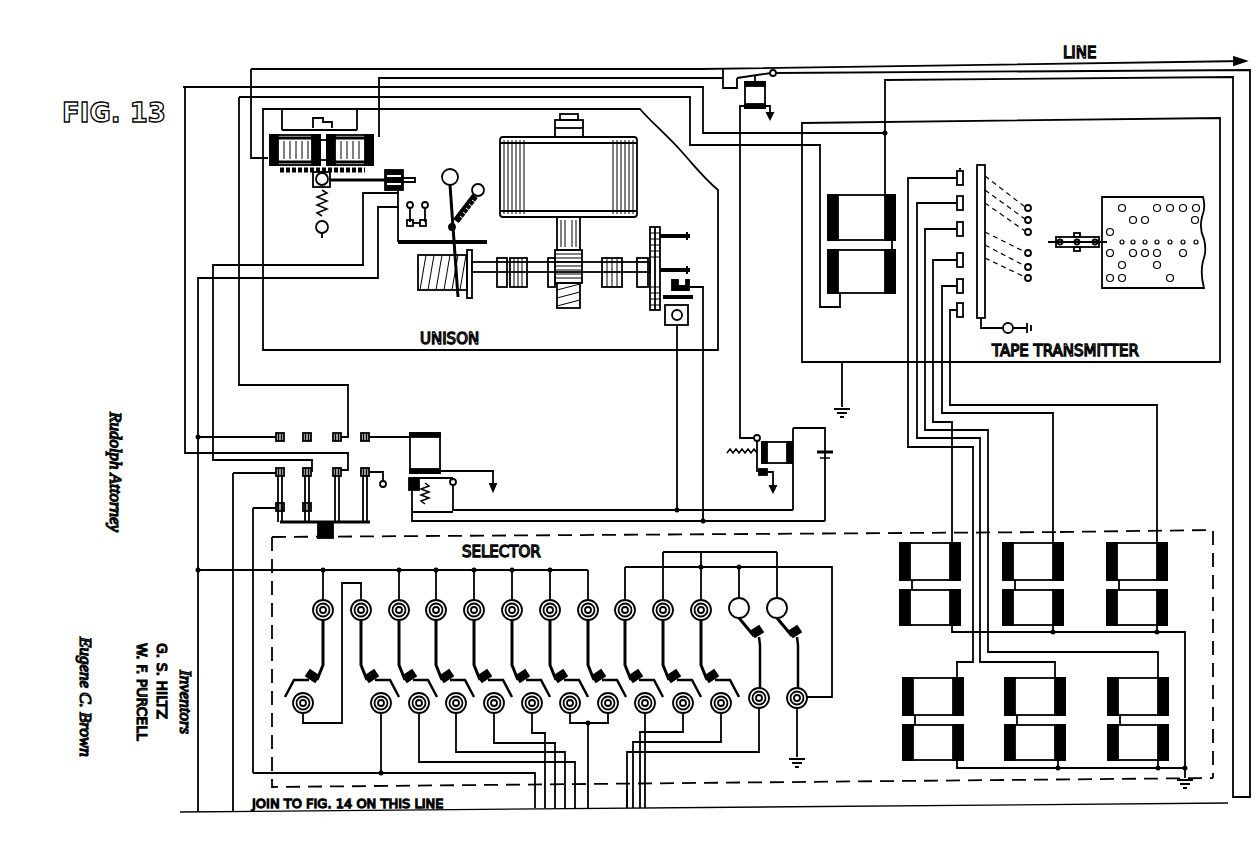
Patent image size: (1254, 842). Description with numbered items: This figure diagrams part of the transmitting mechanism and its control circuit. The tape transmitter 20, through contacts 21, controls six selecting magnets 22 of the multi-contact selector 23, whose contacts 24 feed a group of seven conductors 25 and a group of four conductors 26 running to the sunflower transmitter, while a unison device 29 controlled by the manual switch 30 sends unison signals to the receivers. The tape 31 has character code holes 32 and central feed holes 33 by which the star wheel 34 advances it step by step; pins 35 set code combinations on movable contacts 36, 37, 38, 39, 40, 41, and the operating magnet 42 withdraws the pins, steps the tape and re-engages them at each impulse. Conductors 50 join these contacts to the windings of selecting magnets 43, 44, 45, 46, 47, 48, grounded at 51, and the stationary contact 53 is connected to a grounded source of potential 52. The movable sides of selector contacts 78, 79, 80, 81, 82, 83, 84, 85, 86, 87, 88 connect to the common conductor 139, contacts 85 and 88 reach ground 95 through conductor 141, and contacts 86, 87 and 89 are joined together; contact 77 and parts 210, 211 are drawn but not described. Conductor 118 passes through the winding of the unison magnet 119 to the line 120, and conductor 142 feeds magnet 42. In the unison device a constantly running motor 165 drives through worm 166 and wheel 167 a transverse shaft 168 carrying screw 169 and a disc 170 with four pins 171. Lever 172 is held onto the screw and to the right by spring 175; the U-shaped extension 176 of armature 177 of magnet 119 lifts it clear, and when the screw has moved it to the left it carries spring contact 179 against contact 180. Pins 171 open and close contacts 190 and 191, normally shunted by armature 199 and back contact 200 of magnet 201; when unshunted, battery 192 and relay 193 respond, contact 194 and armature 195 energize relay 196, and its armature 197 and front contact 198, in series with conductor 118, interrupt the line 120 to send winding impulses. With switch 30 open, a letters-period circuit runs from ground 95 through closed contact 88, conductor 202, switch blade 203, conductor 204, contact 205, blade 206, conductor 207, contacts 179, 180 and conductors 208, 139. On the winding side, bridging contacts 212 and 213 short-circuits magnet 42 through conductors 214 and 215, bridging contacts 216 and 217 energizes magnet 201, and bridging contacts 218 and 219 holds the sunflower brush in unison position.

The tape transmitter 20 is at (1052, 130).
The contacts 21 is at (940, 413).
The selecting magnets 22 is at (1083, 532).
The multi-contact selector 23 is at (833, 534).
The contacts 24 is at (334, 653).
The conductors 25 is at (537, 808).
The conductors 26 is at (647, 799).
The unison device 29 is at (553, 352).
The manual switch 30 is at (340, 534).
The tape 31 is at (1135, 198).
The character code holes 32 is at (1183, 204).
The feed holes 33 is at (1102, 250).
The star wheel 34 is at (1065, 236).
The pins 35 is at (1031, 208).
The transmitting contact 36 is at (959, 171).
The transmitting contact 37 is at (957, 201).
The transmitting contact 38 is at (957, 226).
The transmitting contact 39 is at (957, 257).
The transmitting contact 40 is at (957, 282).
The transmitting contact 41 is at (958, 318).
The operating magnet 42 is at (857, 200).
The selecting magnet 43 is at (927, 690).
The selecting magnet 44 is at (1030, 692).
The selecting magnet 45 is at (1135, 690).
The selecting magnet 46 is at (1133, 550).
The selecting magnet 47 is at (1028, 550).
The selecting magnet 48 is at (932, 550).
The conductors 50 is at (955, 382).
The ground 51 is at (1178, 786).
The grounded source of potential 52 is at (1017, 324).
The stationary contact 53 is at (985, 180).
The selector relay 77 is at (316, 684).
The selector contact 78 is at (375, 678).
The selector contact 79 is at (413, 678).
The selector contact 80 is at (450, 678).
The selector contact 81 is at (488, 678).
The selector contact 82 is at (526, 678).
The selector contact 83 is at (564, 678).
The selector contact 84 is at (602, 678).
The selector contact 85 is at (640, 678).
The selector contact 86 is at (677, 678).
The selector contact 87 is at (715, 678).
The selector contact 88 is at (698, 687).
The selector contact 89 is at (787, 654).
The ground 95 is at (805, 761).
The conductor 118 is at (848, 73).
The unison magnet 119 is at (295, 170).
The line 120 is at (676, 68).
The common conductor 139 is at (197, 619).
The conductor 141 is at (832, 602).
The conductor 142 is at (842, 384).
The motor 165 is at (637, 172).
The worm 166 is at (585, 286).
The wheel 167 is at (568, 316).
The transverse shaft 168 is at (536, 287).
The screw 169 is at (438, 290).
The disc 170 is at (657, 230).
The pins 171 is at (680, 266).
The lever 172 is at (460, 180).
The spring 175 is at (475, 216).
The U-shaped extension 176 is at (409, 248).
The armature 177 is at (311, 188).
The spring contact 179 is at (433, 214).
The contact 180 is at (394, 242).
The contact 190 is at (684, 287).
The contact 191 is at (665, 327).
The battery 192 is at (833, 455).
The relay 193 is at (778, 442).
The contact 194 is at (769, 478).
The armature 195 is at (755, 465).
The relay 196 is at (761, 91).
The armature 197 is at (755, 75).
The front contact 198 is at (727, 74).
The armature 199 is at (433, 502).
The back contact 200 is at (410, 496).
The magnet 201 is at (440, 454).
The conductor 202 is at (233, 670).
The switch blade 203 is at (276, 502).
The conductor 204 is at (303, 529).
The switch contact 205 is at (334, 540).
The blade 206 is at (346, 517).
The conductor 207 is at (214, 402).
The conductor 208 is at (308, 280).
The switch spring 210 is at (278, 513).
The selector boundary line 211 is at (255, 622).
The contact 212 is at (338, 430).
The contact 213 is at (334, 468).
The conductor 214 is at (244, 162).
The conductor 215 is at (185, 244).
The contact 216 is at (372, 435).
The contact 217 is at (371, 478).
The contact 218 is at (276, 436).
The contact 219 is at (276, 475).